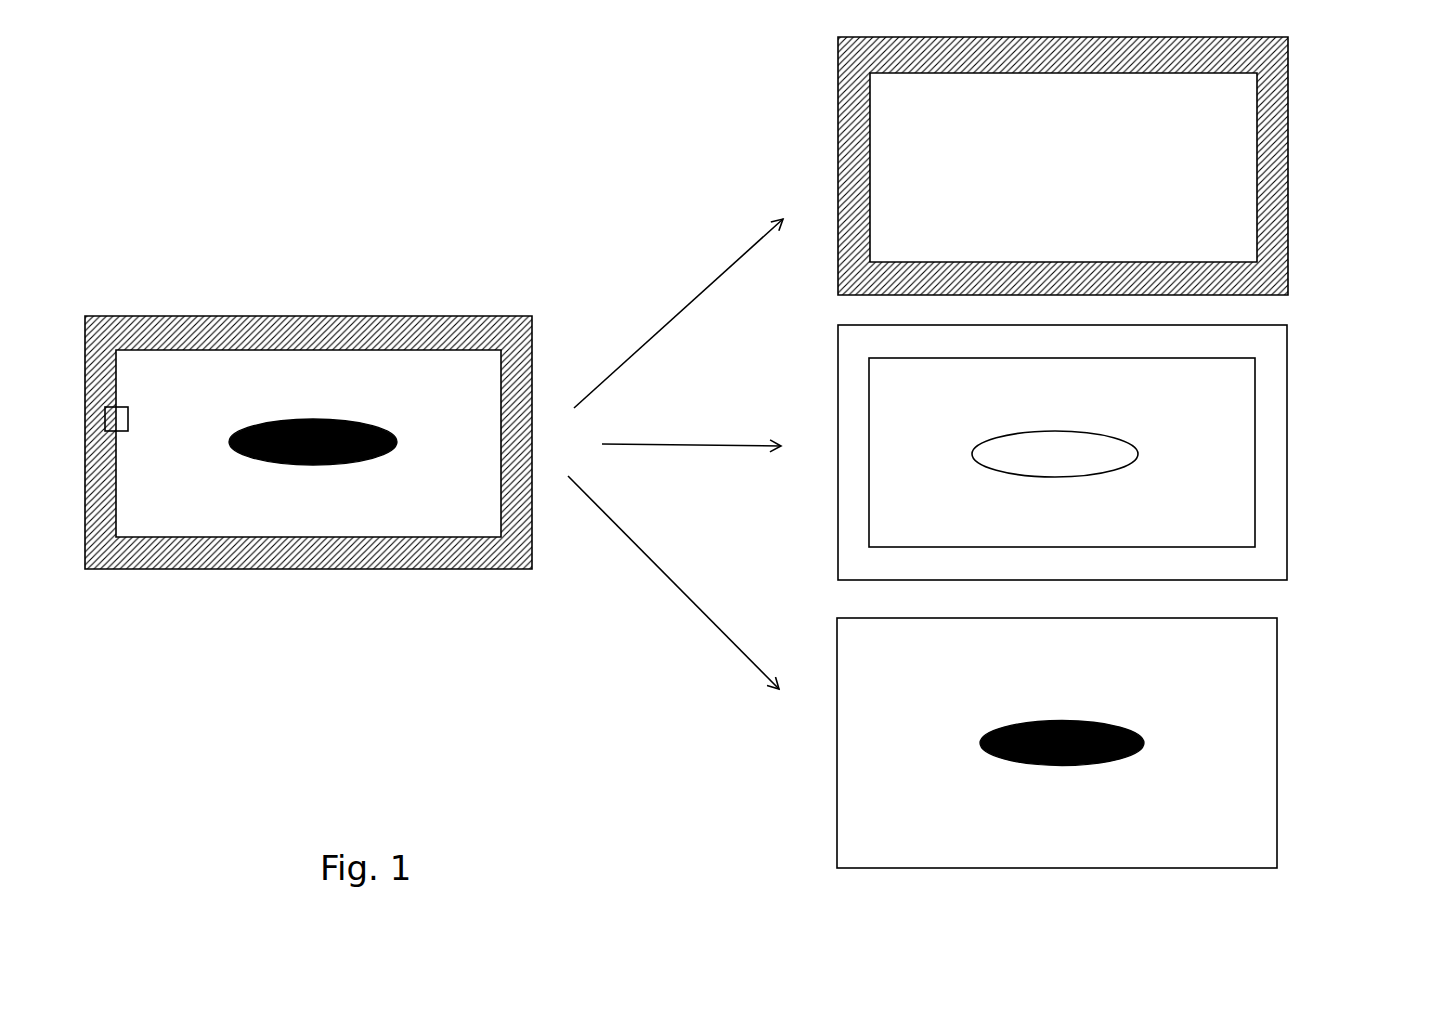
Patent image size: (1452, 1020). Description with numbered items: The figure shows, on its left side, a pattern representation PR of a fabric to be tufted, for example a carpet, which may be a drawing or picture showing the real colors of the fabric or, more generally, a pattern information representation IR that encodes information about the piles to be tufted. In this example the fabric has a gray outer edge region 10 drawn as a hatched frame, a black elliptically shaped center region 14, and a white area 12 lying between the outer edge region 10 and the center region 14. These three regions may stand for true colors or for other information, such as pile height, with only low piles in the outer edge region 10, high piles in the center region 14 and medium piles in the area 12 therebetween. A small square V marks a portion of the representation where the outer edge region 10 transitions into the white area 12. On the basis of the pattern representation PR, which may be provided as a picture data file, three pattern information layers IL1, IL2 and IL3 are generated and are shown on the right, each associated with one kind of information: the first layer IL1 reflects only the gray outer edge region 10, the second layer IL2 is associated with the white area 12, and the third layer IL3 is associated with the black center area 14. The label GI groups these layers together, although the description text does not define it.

The outer edge region 10 is at (385, 322).
The area between outer edge region and center region 12 is at (408, 512).
The center region 14 is at (265, 422).
The square V is at (118, 406).
The pattern information representation IR is at (524, 250).
The pattern representation PR is at (186, 622).
The pattern information layer IL1 is at (1330, 103).
The pattern information layer IL2 is at (1343, 403).
The pattern information layer IL3 is at (1321, 692).
The group of image layers GI is at (1299, 846).